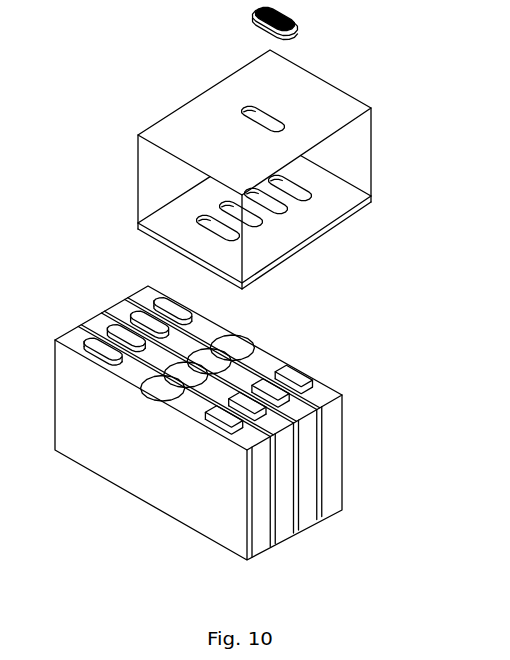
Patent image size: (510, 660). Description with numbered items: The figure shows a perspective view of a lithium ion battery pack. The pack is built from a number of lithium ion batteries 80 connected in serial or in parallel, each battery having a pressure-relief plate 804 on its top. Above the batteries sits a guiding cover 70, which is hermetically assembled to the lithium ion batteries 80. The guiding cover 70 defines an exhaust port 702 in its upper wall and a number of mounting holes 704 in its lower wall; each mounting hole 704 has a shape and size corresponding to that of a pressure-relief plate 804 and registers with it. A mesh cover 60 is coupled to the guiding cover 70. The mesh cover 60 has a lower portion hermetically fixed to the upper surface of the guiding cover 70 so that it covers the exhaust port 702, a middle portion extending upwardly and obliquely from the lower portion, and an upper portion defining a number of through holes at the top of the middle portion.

The mesh cover 60 is at (295, 28).
The guiding cover 70 is at (148, 177).
The exhaust port 702 is at (258, 118).
The mounting holes 704 is at (298, 193).
The lithium ion batteries 80 is at (262, 540).
The pressure-relief plate 804 is at (237, 348).